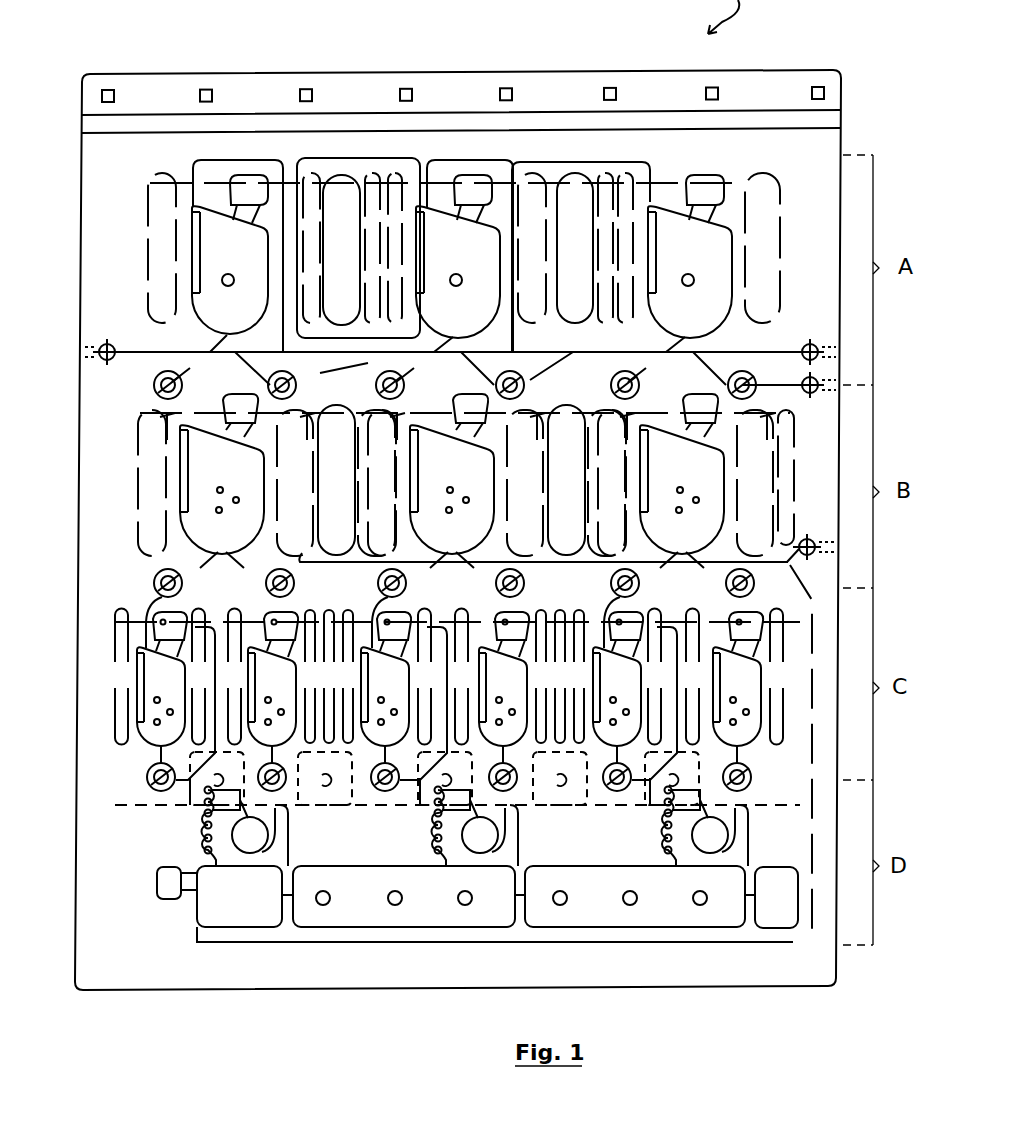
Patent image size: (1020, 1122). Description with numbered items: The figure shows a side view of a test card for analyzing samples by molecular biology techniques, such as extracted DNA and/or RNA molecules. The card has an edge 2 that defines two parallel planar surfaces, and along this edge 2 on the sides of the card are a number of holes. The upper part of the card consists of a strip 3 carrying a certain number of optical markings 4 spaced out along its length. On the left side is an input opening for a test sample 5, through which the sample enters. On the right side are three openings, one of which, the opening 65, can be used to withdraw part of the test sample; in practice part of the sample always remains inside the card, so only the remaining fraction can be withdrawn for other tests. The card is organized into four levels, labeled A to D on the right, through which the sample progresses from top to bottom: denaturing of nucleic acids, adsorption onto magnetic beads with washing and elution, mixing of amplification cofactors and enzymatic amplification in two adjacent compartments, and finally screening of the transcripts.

The edge 2 is at (80, 232).
The strip 3 is at (148, 92).
The optical markings 4 is at (415, 92).
The input opening for a test sample 5 is at (85, 348).
The opening for withdrawing part of the test sample 65 is at (828, 390).